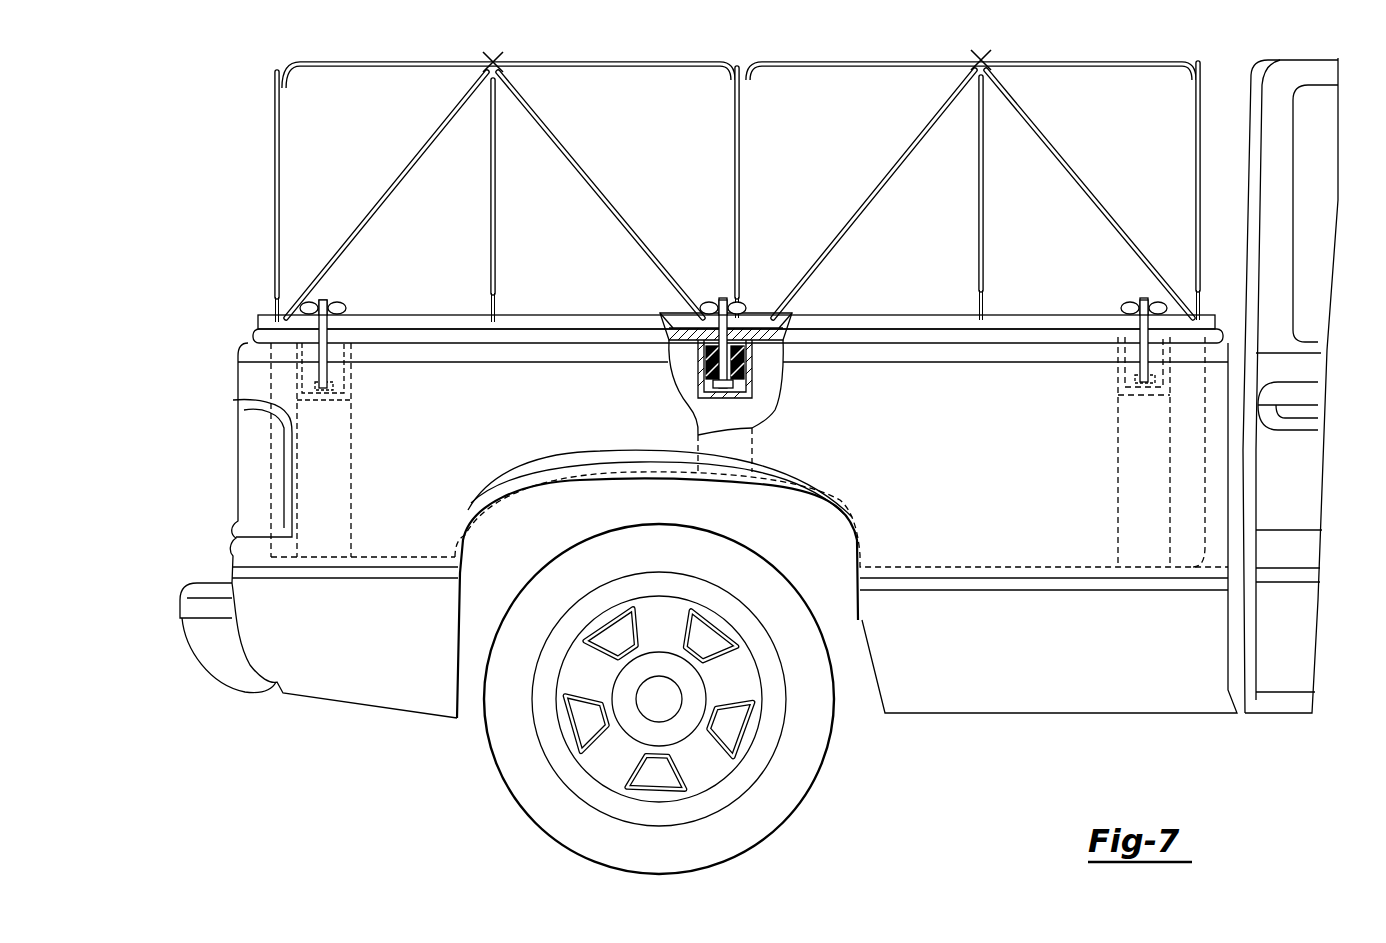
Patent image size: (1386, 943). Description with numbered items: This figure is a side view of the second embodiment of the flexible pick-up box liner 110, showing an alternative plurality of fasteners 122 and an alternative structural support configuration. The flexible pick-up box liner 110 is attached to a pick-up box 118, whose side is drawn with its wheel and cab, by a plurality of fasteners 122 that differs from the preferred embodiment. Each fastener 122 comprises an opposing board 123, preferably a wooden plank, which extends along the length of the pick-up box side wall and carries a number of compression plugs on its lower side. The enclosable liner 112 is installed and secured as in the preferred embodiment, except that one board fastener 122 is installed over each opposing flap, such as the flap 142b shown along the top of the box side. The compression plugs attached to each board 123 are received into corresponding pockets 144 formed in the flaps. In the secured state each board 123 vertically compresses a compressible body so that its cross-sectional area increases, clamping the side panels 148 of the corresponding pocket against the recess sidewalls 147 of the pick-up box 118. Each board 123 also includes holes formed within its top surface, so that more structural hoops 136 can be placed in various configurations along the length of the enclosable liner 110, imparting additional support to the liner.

The flexible pick-up box liner 110 is at (236, 128).
The enclosable liner 112 is at (340, 68).
The pick-up box 118 is at (200, 544).
The fasteners 122 is at (250, 302).
The board 123 is at (543, 322).
The structural hoops 136 is at (494, 58).
The flap 142b is at (257, 340).
The pockets 144 is at (1137, 380).
The recess sidewalls 147 is at (297, 420).
The side panels 148 is at (297, 377).